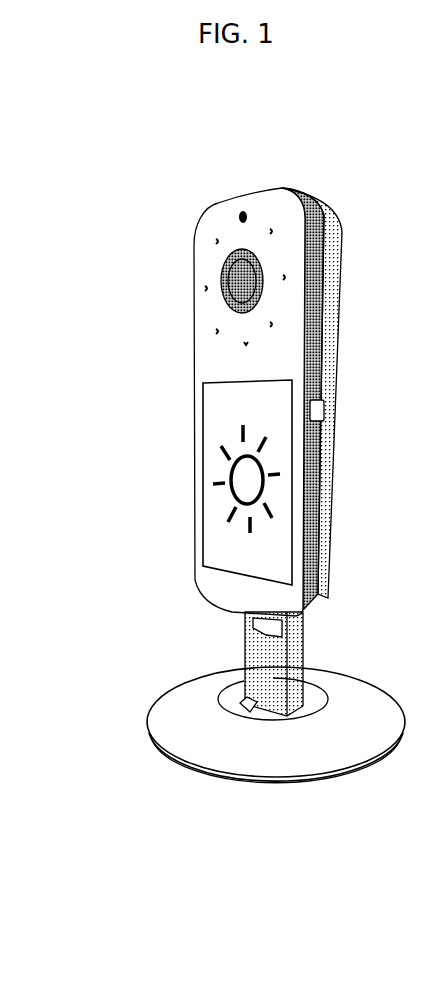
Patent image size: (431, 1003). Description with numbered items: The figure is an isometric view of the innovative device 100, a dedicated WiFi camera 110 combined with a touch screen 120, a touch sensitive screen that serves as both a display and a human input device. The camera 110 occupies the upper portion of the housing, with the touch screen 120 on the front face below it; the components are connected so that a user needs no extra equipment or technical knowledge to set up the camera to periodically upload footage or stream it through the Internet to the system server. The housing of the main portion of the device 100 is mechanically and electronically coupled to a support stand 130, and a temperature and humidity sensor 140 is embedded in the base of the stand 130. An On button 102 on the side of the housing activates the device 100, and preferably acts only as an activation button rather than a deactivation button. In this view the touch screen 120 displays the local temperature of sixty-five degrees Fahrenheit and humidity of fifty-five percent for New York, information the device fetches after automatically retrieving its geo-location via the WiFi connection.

The device 100 is at (374, 180).
The WiFi camera 110 is at (153, 257).
The touch screen 120 is at (132, 482).
The support stand 130 is at (135, 663).
The On button 102 is at (324, 408).
The temperature and humidity sensor 140 is at (243, 711).